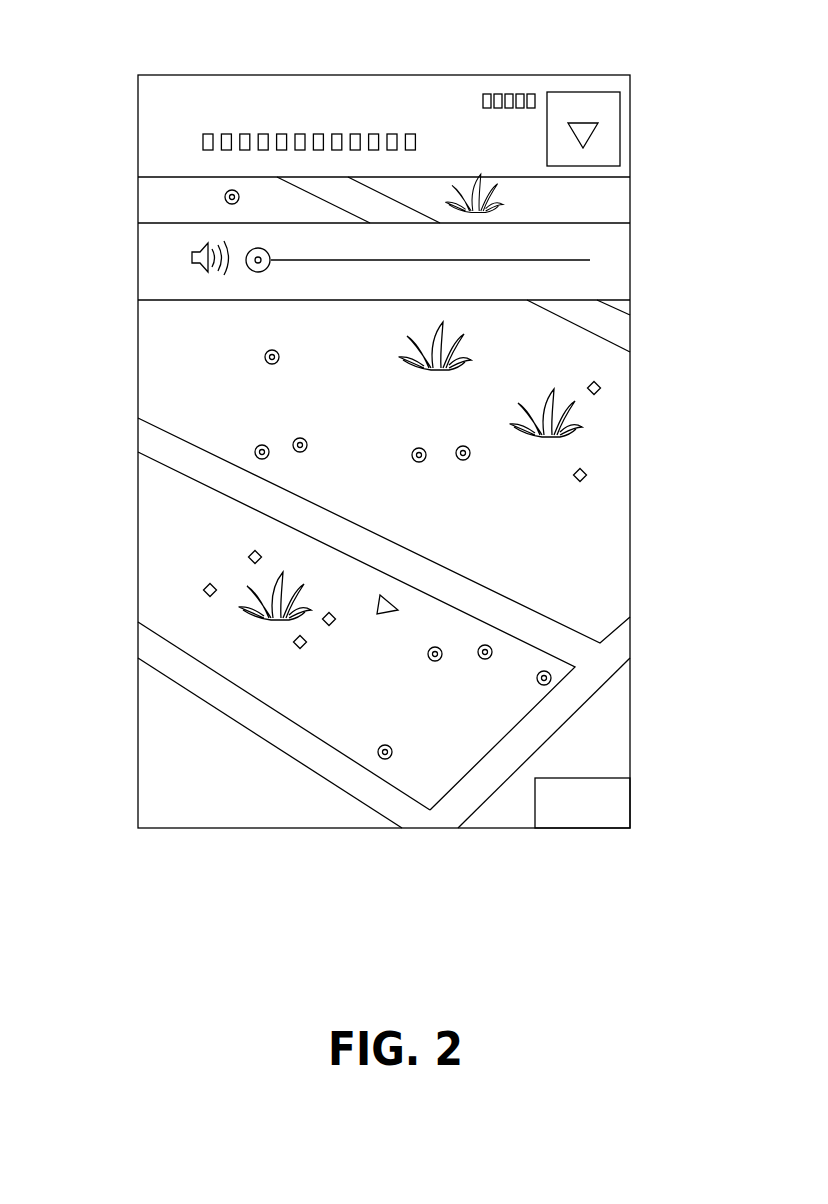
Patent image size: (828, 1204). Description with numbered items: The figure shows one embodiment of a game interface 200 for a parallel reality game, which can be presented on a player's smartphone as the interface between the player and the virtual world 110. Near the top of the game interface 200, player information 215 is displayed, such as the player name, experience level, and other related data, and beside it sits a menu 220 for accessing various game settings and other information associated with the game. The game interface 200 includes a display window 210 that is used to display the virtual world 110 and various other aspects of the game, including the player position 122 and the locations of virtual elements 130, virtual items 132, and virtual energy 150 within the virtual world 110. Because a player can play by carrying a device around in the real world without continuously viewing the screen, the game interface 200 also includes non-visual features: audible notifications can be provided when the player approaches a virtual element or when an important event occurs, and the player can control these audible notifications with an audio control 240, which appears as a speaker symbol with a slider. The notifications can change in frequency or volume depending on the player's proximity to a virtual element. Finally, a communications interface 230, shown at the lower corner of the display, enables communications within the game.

The game interface 200 is at (398, 27).
The player information 215 is at (150, 95).
The menu 220 is at (612, 130).
The display window 210 is at (618, 207).
The audio control 240 is at (150, 244).
The virtual world 110 is at (620, 537).
The virtual elements 130 is at (402, 348).
The virtual energy 150 is at (280, 362).
The virtual items 132 is at (249, 557).
The player position 122 is at (377, 602).
The communications interface 230 is at (628, 808).